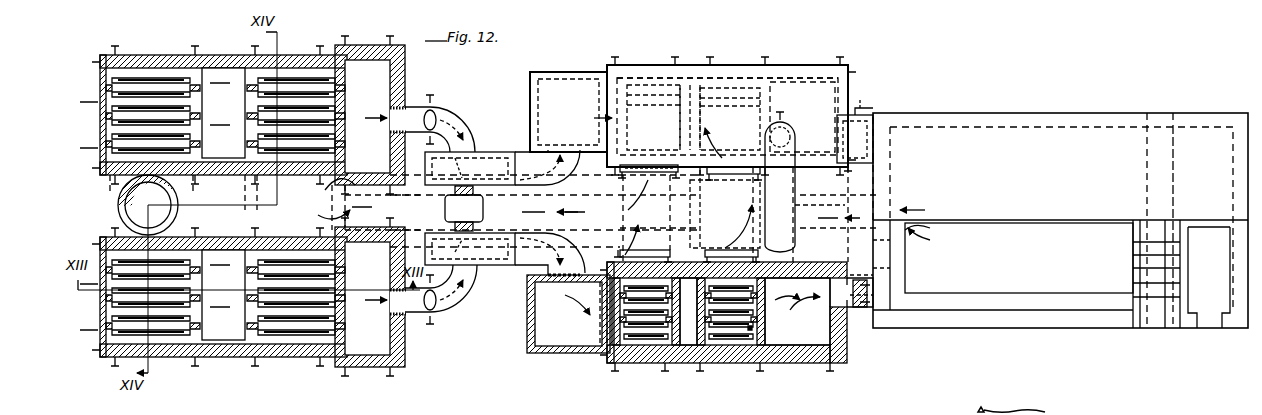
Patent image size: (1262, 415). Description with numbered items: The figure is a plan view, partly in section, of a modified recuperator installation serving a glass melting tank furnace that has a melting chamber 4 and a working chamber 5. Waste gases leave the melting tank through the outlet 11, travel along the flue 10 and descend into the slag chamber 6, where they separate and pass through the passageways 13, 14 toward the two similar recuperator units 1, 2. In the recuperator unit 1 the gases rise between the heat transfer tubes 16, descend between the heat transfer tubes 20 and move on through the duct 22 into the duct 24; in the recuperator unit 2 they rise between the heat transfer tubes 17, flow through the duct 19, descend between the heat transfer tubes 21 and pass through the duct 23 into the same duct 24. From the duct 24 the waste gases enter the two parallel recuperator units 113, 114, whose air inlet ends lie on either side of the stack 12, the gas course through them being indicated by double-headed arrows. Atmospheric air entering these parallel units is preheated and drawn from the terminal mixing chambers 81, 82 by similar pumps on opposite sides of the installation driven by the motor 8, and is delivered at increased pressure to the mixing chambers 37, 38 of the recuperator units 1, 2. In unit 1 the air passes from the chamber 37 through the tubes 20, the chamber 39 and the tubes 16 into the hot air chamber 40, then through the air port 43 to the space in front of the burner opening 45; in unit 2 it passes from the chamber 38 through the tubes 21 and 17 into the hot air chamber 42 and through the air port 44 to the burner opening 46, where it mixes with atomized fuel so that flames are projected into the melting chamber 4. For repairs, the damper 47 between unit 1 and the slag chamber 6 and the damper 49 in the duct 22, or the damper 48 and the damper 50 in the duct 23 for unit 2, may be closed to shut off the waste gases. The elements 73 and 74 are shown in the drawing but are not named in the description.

The recuperator unit 1 is at (648, 347).
The recuperator unit 2 is at (648, 78).
The melting chamber 4 is at (1062, 130).
The working chamber 5 is at (1205, 305).
The slag chamber 6 is at (685, 214).
The motor 8 is at (445, 209).
The flue 10 is at (887, 206).
The outlet 11 is at (887, 210).
The stack 12 is at (117, 206).
The passageway 13 is at (700, 235).
The passageway 14 is at (720, 160).
The heat transfer tubes 16 is at (748, 328).
The heat transfer tubes 17 is at (716, 92).
The duct 19 is at (690, 85).
The heat transfer tubes 20 is at (606, 302).
The heat transfer tubes 21 is at (636, 90).
The duct 22 is at (662, 252).
The duct 23 is at (630, 165).
The duct 24 is at (425, 205).
The chamber 37 is at (540, 330).
The chamber 38 is at (568, 74).
The chamber 39 is at (690, 227).
The hot air chamber 40 is at (795, 347).
The hot air chamber 42 is at (805, 90).
The air port 43 is at (866, 296).
The air port 44 is at (862, 112).
The burner opening 45 is at (811, 299).
The burner opening 46 is at (840, 137).
The damper 47 is at (725, 250).
The damper 48 is at (735, 168).
The damper 49 is at (637, 255).
The damper 50 is at (655, 167).
The passage 73 is at (785, 210).
The pipe 74 is at (782, 127).
The terminal mixing chamber 81 is at (397, 83).
The terminal mixing chamber 82 is at (397, 347).
The parallel recuperator unit 113 is at (102, 57).
The parallel recuperator unit 114 is at (162, 354).